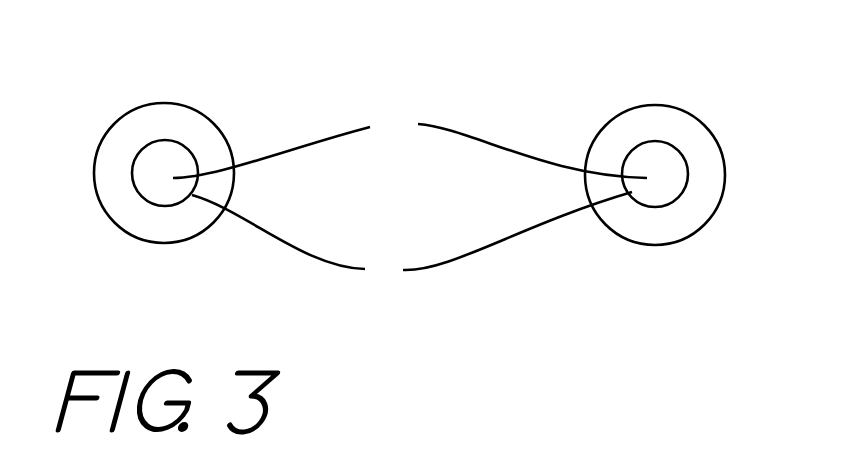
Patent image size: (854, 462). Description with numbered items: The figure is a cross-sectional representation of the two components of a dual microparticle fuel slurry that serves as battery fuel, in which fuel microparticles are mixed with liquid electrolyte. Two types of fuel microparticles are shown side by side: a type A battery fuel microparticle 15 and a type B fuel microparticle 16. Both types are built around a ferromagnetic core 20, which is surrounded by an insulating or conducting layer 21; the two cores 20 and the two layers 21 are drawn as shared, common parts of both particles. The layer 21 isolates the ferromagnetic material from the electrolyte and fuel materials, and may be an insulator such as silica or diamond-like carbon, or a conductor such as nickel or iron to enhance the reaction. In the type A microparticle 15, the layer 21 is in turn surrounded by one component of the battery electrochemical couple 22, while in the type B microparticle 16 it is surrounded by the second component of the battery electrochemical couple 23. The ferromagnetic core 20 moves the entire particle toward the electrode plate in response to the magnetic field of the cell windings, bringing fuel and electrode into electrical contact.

The type A battery fuel microparticle 15 is at (137, 108).
The type B fuel microparticle 16 is at (688, 108).
The ferromagnetic core 20 is at (410, 145).
The insulating or conducting layer 21 is at (412, 238).
The one component of the battery electrochemical couple 22 is at (138, 220).
The second component of the battery electrochemical couple 23 is at (680, 220).